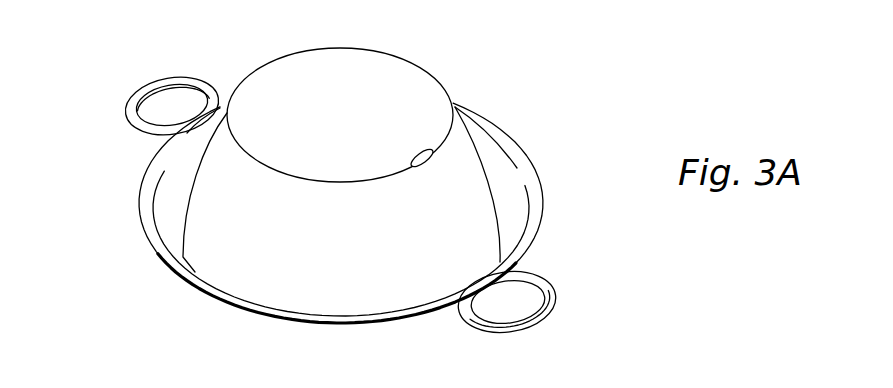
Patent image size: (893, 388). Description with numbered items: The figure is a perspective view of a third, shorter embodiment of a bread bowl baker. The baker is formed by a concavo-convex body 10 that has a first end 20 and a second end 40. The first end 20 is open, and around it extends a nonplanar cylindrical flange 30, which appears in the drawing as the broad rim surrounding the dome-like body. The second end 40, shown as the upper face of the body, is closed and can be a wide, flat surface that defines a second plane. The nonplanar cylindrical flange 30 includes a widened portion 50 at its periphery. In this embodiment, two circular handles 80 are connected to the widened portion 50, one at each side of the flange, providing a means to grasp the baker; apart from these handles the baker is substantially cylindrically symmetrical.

The concavo-convex body 10 is at (447, 187).
The first end 20 is at (493, 260).
The nonplanar cylindrical flange 30 is at (168, 210).
The second end 40 is at (340, 97).
The widened portion 50 is at (520, 152).
The circular handles 80 is at (132, 97).